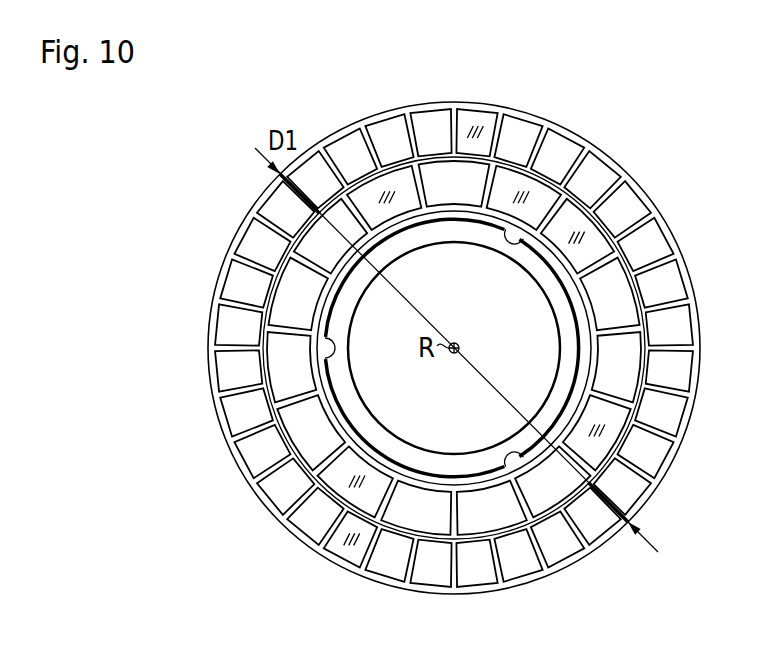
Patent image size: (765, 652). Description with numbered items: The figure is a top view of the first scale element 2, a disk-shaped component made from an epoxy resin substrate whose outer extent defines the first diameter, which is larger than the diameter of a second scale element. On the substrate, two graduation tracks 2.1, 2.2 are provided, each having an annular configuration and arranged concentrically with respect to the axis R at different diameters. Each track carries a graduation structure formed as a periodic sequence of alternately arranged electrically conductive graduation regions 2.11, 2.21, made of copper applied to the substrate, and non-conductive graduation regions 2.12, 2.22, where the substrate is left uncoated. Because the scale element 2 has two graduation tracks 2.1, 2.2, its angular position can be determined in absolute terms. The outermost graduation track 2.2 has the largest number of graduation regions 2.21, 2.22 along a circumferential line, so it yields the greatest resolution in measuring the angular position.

The first scale element 2 is at (438, 348).
The graduation track 2.1 is at (448, 348).
The electrically conductive graduation region 2.11 is at (323, 418).
The non-conductive graduation region 2.12 is at (333, 430).
The graduation track 2.2 is at (435, 348).
The electrically conductive graduation region 2.21 is at (258, 488).
The non-conductive graduation region 2.22 is at (280, 518).